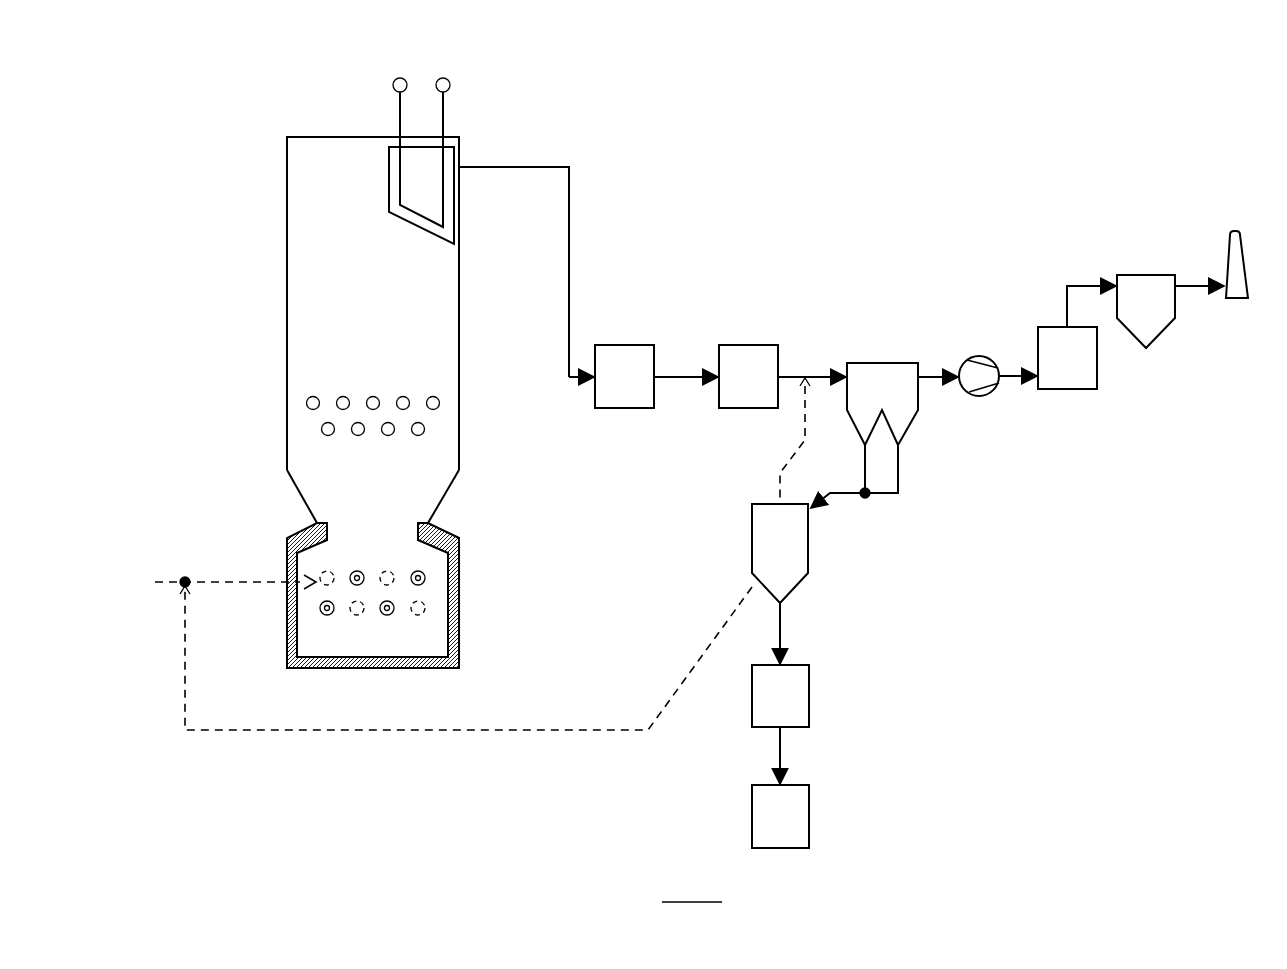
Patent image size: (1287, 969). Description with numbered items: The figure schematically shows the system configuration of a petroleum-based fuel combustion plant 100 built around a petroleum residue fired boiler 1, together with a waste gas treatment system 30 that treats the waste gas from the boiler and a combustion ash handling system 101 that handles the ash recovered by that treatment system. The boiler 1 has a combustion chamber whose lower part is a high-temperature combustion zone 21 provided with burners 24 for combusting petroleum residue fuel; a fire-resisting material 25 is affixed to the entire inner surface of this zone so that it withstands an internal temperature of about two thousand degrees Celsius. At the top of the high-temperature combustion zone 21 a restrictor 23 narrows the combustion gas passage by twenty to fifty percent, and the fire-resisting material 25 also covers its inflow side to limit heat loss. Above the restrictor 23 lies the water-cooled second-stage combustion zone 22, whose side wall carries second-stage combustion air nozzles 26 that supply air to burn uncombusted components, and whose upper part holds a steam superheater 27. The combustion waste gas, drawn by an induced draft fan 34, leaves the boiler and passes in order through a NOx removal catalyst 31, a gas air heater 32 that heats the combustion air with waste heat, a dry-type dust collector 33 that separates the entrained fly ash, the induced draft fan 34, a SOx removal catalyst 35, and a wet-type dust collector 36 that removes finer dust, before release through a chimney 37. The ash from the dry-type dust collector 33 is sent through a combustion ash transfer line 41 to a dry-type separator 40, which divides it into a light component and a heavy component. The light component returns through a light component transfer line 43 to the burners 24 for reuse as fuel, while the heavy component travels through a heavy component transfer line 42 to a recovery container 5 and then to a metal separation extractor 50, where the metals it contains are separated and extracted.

The petroleum residue fired boiler 1 is at (500, 90).
The petroleum-based fuel combustion plant 100 is at (880, 126).
The combustion ash handling system 101 is at (920, 653).
The high-temperature combustion zone 21 is at (360, 651).
The second-stage combustion zone 22 is at (360, 303).
The restrictor 23 is at (360, 523).
The burners 24 is at (350, 574).
The fire-resisting material 25 is at (287, 638).
The second-stage combustion air nozzles 26 is at (321, 429).
The steam superheater 27 is at (433, 180).
The waste gas treatment system 30 is at (754, 322).
The NOx removal catalyst 31 is at (612, 390).
The gas air heater 32 is at (736, 390).
The dry-type dust collector 33 is at (869, 401).
The induced draft fan 34 is at (979, 355).
The SOx removal catalyst 35 is at (1054, 371).
The wet-type dust collector 36 is at (1133, 309).
The chimney 37 is at (1227, 255).
The separator 40 is at (767, 548).
The combustion ash transfer line 41 is at (887, 496).
The heavy component transfer line 42 is at (784, 620).
The light component transfer line 43 is at (594, 734).
The recovery container 5 is at (772, 710).
The metal separation extractor 50 is at (767, 831).